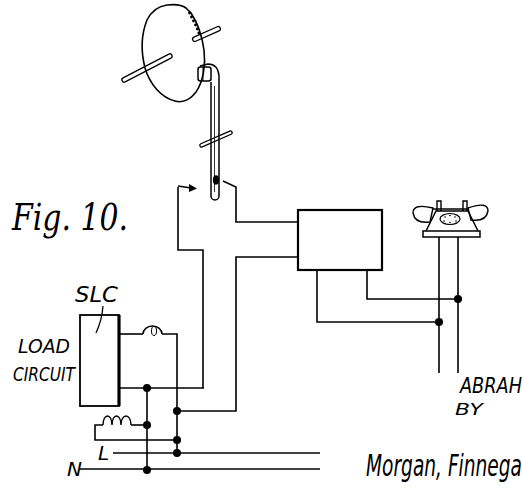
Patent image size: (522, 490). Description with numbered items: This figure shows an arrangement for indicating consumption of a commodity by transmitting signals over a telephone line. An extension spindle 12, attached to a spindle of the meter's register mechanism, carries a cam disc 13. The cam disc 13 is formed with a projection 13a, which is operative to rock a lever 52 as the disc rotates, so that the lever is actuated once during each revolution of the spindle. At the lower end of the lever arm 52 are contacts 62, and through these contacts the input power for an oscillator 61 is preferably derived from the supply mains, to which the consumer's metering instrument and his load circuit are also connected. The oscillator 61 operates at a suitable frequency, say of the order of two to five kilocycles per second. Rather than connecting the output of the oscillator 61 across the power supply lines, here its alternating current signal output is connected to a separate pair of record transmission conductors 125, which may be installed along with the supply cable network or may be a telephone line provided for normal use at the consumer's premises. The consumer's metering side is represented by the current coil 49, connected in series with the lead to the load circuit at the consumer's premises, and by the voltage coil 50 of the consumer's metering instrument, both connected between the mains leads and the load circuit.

The extension spindle 12 is at (128, 77).
The cam disc 13 is at (172, 88).
The projection 13a is at (193, 14).
The lever 52 is at (221, 105).
The contacts 62 is at (206, 191).
The oscillator 61 is at (340, 212).
The current coil 49 is at (158, 331).
The voltage coil 50 is at (100, 417).
The record transmission conductors 125 is at (441, 345).